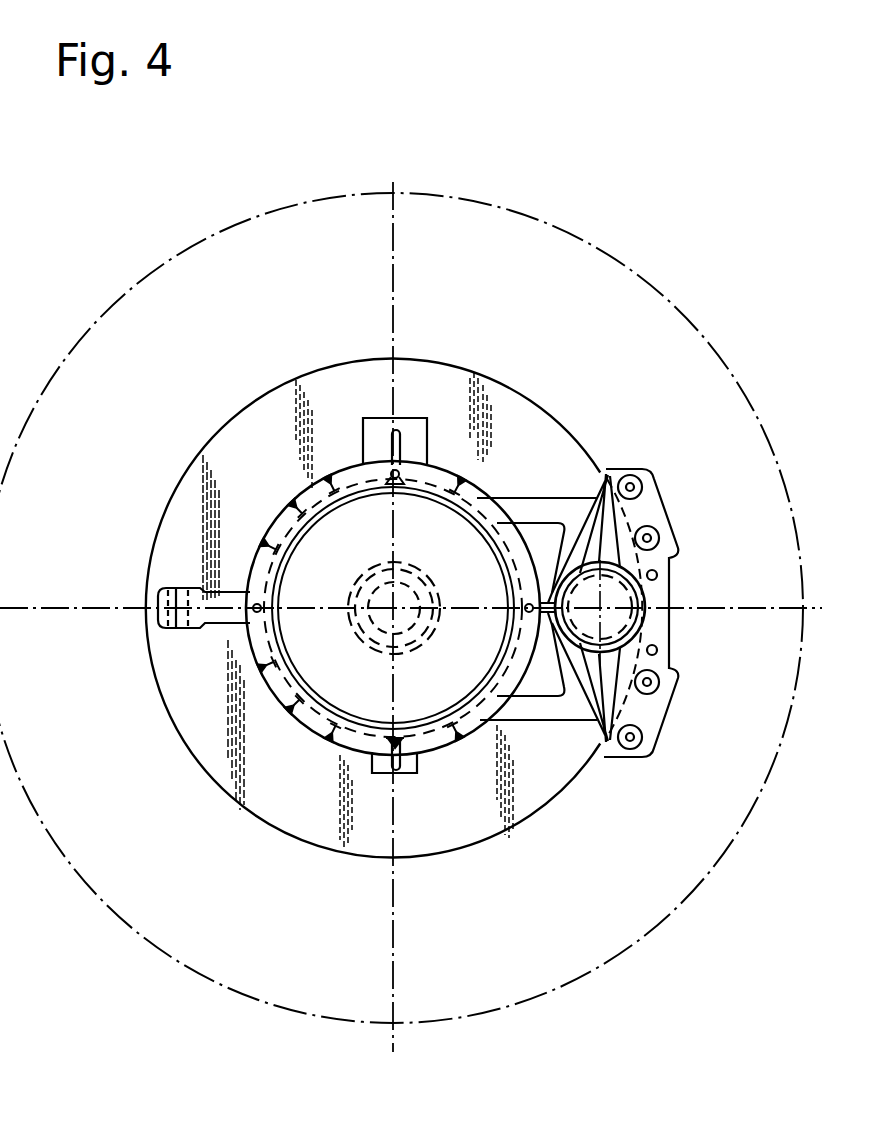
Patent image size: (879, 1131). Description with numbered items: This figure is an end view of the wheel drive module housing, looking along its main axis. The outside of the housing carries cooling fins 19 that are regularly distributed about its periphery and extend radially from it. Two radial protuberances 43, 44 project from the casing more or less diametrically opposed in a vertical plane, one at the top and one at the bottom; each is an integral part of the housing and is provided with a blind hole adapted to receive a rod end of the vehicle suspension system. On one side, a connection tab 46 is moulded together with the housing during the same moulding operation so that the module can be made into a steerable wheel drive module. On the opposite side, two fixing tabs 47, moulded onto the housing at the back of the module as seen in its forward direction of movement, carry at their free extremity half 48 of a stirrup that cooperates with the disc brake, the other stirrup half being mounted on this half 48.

The cooling fins 19 is at (293, 500).
The radial protuberance 43 is at (410, 447).
The radial protuberance 44 is at (422, 765).
The connection tab 46 is at (207, 623).
The fixing tabs 47 is at (543, 510).
The half of a stirrup 48 is at (597, 467).